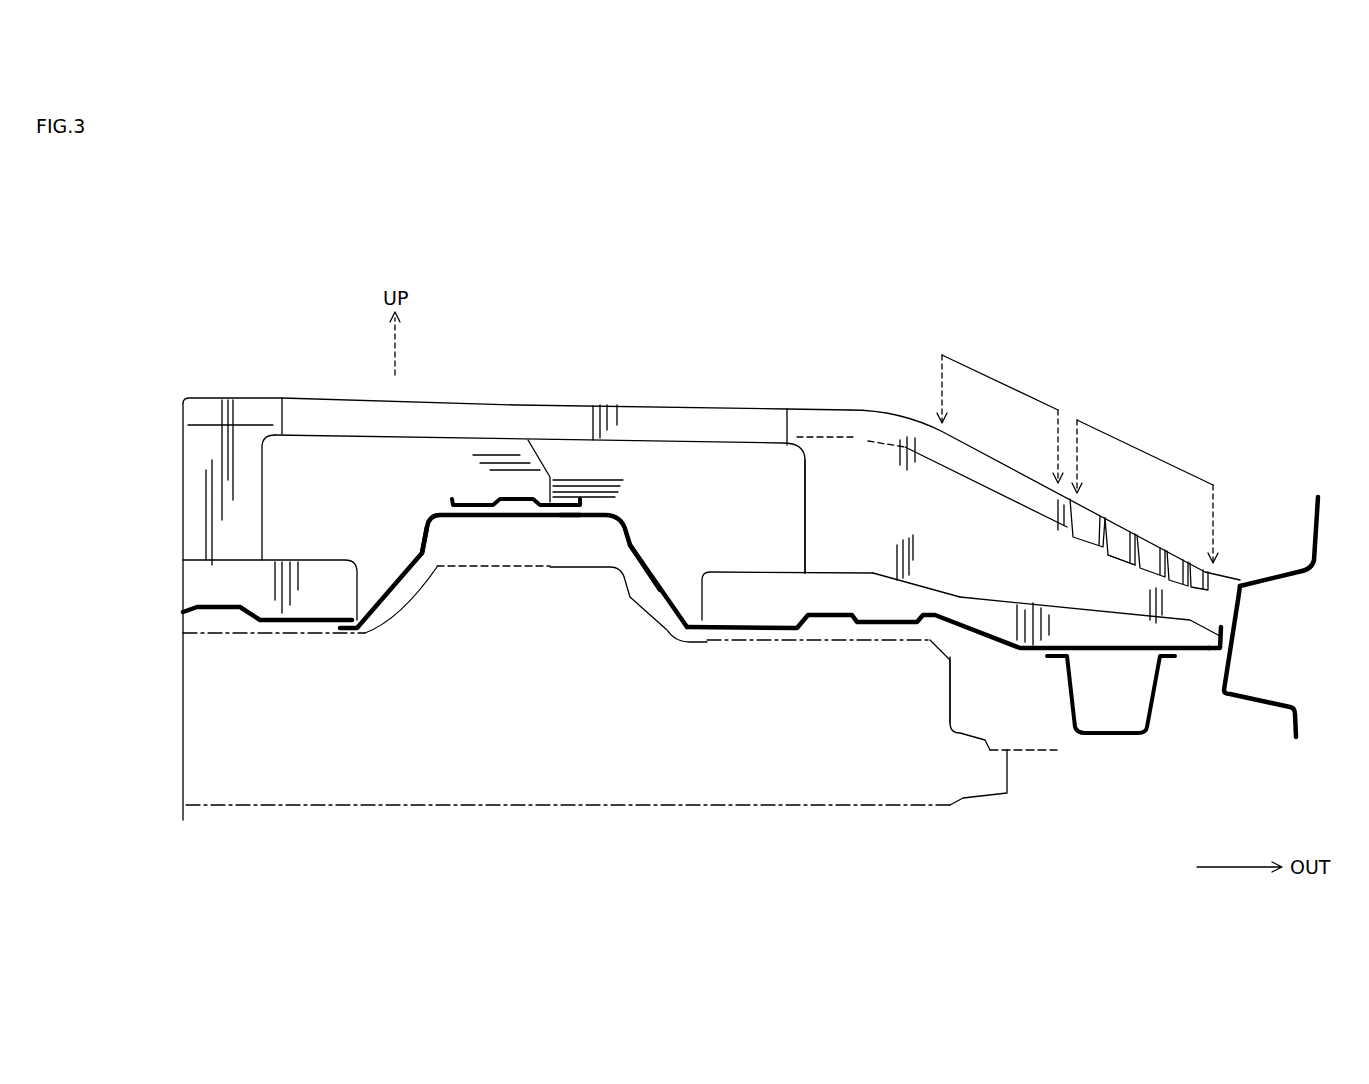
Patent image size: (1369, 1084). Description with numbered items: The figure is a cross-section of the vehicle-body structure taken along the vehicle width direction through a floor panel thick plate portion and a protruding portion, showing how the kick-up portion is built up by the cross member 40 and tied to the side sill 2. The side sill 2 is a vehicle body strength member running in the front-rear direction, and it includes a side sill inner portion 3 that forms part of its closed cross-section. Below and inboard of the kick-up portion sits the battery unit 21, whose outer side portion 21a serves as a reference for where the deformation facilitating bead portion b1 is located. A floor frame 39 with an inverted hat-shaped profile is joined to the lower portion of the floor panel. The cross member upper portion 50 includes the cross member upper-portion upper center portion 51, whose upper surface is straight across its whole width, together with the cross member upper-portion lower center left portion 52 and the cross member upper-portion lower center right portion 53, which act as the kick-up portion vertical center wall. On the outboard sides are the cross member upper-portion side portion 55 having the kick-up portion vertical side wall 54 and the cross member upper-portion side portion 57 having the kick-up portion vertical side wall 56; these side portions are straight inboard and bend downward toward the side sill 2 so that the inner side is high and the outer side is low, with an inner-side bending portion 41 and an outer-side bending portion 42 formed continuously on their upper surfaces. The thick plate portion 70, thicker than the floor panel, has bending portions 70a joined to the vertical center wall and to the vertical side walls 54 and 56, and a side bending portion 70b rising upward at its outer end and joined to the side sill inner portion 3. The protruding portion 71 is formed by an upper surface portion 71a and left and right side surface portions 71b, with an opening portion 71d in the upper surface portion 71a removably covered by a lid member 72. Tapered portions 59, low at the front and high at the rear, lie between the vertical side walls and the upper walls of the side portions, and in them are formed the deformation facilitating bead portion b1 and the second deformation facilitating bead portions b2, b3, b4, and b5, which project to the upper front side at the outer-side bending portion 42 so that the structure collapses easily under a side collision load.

The side sill 2 is at (1338, 534).
The side sill inner portion 3 is at (1238, 603).
The battery unit 21 is at (612, 808).
The outer side portion of the battery unit 21a is at (955, 722).
The floor frame 39 is at (1115, 735).
The cross member 40 is at (550, 387).
The inner-side bending portion 41 is at (1005, 385).
The outer-side bending portion 42 is at (1148, 454).
The cross member upper portion 50 is at (322, 388).
The cross member upper-portion upper center portion 51 is at (695, 418).
The cross member upper-portion lower center left portion 52 is at (767, 493).
The cross member upper-portion lower center right portion 53 is at (340, 484).
The kick-up portion vertical side wall 54 is at (860, 517).
The cross member upper-portion side portion 55 is at (859, 404).
The kick-up portion vertical side wall 56 is at (190, 498).
The cross member upper-portion side portion 57 is at (198, 389).
The tapered portion 59 is at (1112, 557).
The thick plate portion 70 is at (220, 612).
The bending portion 70a is at (268, 567).
The side bending portion 70b is at (1217, 635).
The protruding portion 71 is at (642, 528).
The upper surface portion 71a is at (567, 540).
The side surface portion 71b is at (422, 547).
The opening portion 71d is at (503, 520).
The lid member 72 is at (522, 495).
The deformation facilitating bead portion b1 is at (1067, 512).
The second deformation facilitating bead portion b2 is at (1097, 530).
The second deformation facilitating bead portion b3 is at (1122, 537).
The second deformation facilitating bead portion b4 is at (1150, 545).
The second deformation facilitating bead portion b5 is at (1180, 557).